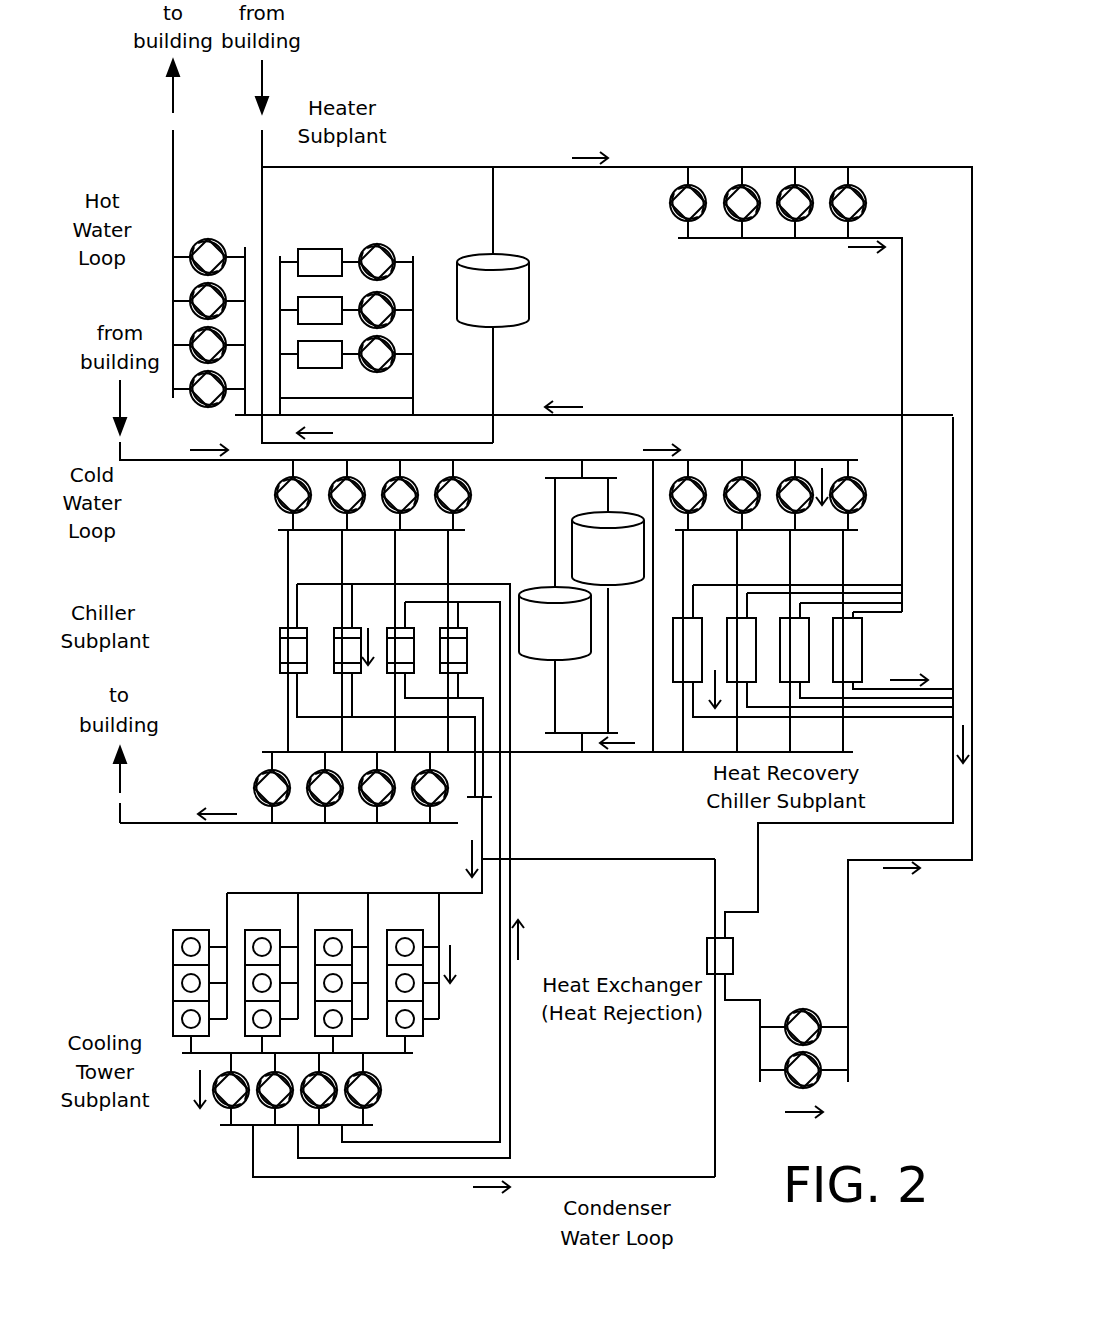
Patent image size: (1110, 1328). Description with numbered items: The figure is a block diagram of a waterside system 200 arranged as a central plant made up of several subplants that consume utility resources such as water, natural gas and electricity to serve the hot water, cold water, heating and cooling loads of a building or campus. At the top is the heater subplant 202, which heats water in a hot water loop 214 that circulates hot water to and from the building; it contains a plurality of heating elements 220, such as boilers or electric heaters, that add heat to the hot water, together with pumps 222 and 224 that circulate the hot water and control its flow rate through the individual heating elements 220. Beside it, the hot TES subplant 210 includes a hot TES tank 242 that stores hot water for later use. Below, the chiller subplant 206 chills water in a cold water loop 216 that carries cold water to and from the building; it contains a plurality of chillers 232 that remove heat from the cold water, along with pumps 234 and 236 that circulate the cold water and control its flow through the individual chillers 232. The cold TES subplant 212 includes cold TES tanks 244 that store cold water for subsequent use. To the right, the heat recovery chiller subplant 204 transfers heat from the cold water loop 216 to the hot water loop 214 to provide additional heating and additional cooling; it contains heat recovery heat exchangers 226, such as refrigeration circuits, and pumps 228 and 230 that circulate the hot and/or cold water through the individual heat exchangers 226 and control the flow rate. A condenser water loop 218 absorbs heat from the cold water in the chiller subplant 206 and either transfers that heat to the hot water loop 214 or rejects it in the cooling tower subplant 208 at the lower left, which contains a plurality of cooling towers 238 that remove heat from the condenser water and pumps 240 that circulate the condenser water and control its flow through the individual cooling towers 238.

The waterside system 200 is at (822, 40).
The heater subplant 202 is at (373, 256).
The heat recovery chiller subplant 204 is at (803, 749).
The chiller subplant 206 is at (429, 844).
The cooling tower subplant 208 is at (277, 1009).
The hot thermal energy storage subplant 210 is at (547, 305).
The cold thermal energy storage subplant 212 is at (571, 606).
The hot water loop 214 is at (173, 174).
The cold water loop 216 is at (172, 463).
The condenser water loop 218 is at (697, 1180).
The heating elements 220 is at (300, 249).
The pumps 222 is at (213, 241).
The pumps 224 is at (387, 247).
The heat recovery heat exchangers 226 is at (862, 645).
The pumps 228 is at (851, 477).
The pumps 230 is at (866, 197).
The chillers 232 is at (280, 645).
The pumps 234 is at (258, 778).
The pumps 236 is at (275, 495).
The cooling towers 238 is at (423, 1030).
The pumps 240 is at (383, 1100).
The hot TES tank 242 is at (548, 310).
The cold TES tanks 244 is at (596, 526).